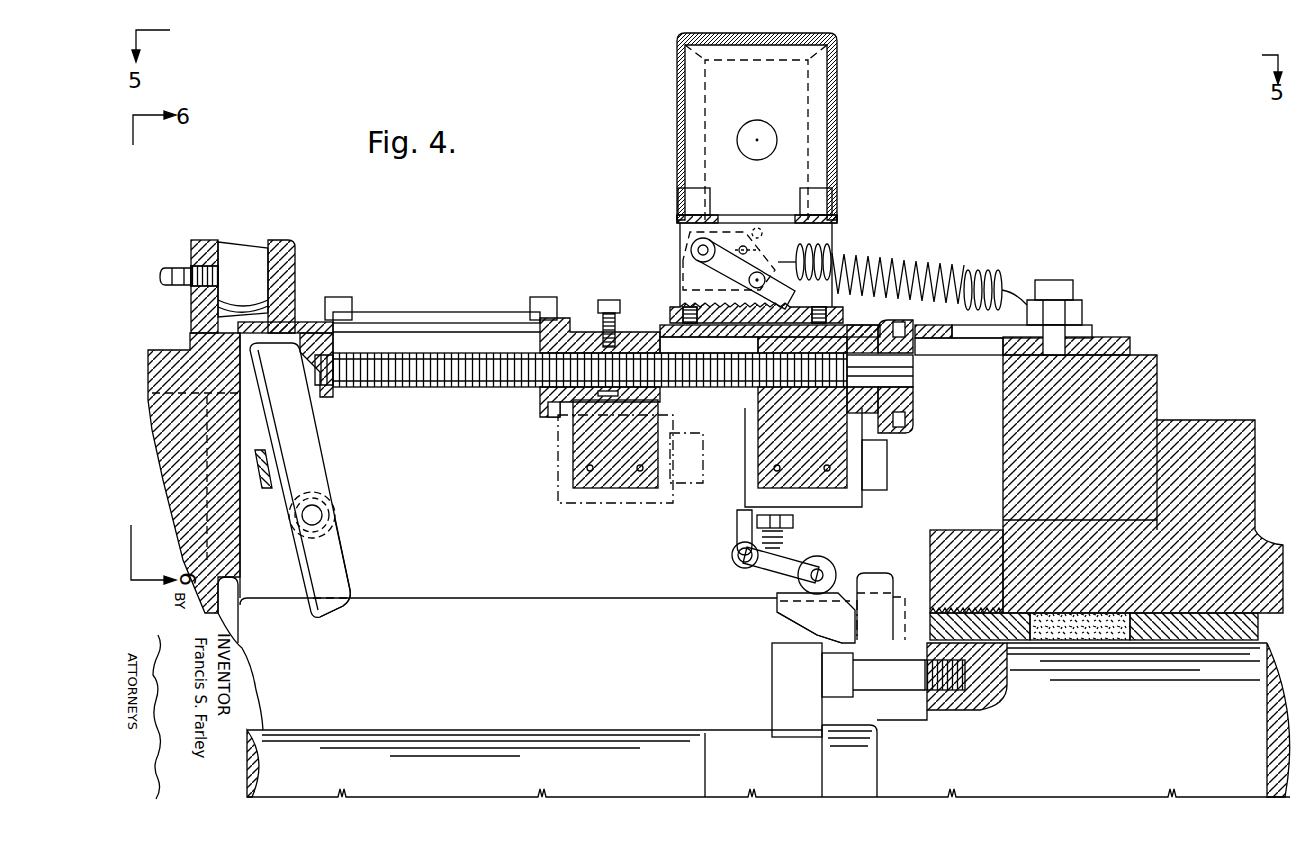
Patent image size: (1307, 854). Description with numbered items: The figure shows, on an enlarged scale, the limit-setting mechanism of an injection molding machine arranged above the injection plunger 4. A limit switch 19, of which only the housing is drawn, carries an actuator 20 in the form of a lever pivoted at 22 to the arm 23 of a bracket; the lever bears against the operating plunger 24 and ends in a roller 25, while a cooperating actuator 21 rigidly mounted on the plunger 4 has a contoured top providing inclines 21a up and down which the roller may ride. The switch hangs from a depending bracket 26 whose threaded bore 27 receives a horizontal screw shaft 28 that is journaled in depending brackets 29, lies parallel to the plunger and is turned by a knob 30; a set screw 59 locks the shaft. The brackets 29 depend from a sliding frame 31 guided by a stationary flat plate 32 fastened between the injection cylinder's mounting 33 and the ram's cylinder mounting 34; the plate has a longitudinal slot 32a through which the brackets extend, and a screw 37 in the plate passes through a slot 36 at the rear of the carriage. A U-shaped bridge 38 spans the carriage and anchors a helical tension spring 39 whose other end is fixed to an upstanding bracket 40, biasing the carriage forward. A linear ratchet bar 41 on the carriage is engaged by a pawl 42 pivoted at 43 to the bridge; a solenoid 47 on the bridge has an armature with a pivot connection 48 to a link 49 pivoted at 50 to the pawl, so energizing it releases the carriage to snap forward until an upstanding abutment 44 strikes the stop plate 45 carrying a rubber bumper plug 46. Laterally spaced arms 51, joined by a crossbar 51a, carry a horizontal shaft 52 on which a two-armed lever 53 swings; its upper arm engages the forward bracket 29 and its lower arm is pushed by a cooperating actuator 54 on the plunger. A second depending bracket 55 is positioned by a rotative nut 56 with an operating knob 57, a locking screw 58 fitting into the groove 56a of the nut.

The injection plunger 4 is at (518, 733).
The limit switch 19 is at (855, 497).
The actuator 20 is at (793, 563).
The cooperating actuator 21 is at (787, 602).
The inclines 21a is at (813, 602).
The pivot 22 is at (737, 557).
The arm 23 is at (740, 527).
The operating plunger 24 is at (783, 535).
The roller 25 is at (832, 567).
The depending bracket 26 is at (763, 402).
The threaded bore 27 is at (793, 362).
The screw shaft 28 is at (473, 387).
The depending brackets 29 is at (340, 390).
The knob 30 is at (913, 392).
The sliding frame 31 is at (303, 318).
The flat plate 32 is at (1107, 337).
The slot 32a is at (428, 342).
The injection cylinder's mounting 33 is at (184, 348).
The injection ram's cylinder mounting 34 is at (1157, 385).
The slot 36 is at (1015, 330).
The screw 37 is at (1083, 307).
The bridge 38 is at (832, 220).
The helical tension spring 39 is at (907, 260).
The bracket 40 is at (1057, 280).
The linear ratchet bar 41 is at (735, 306).
The pawl 42 is at (700, 277).
The pivot 43 is at (700, 250).
The upstanding abutment 44 is at (287, 243).
The upstanding stop plate 45 is at (213, 240).
The rubber bumper plug 46 is at (244, 240).
The solenoid 47 is at (818, 120).
The pivot connection 48 is at (742, 244).
The link 49 is at (772, 228).
The pivot 50 is at (748, 283).
The arms 51 is at (333, 448).
The crossbar 51a is at (260, 483).
The horizontal shaft 52 is at (312, 515).
The two-armed lever 53 is at (347, 555).
The cooperating actuator 54 is at (880, 573).
The second depending bracket 55 is at (608, 488).
The rotative nut 56 is at (663, 392).
The groove 56a is at (600, 395).
The operating knob 57 is at (540, 400).
The retaining and locking screw 58 is at (607, 300).
The set screw 59 is at (880, 308).